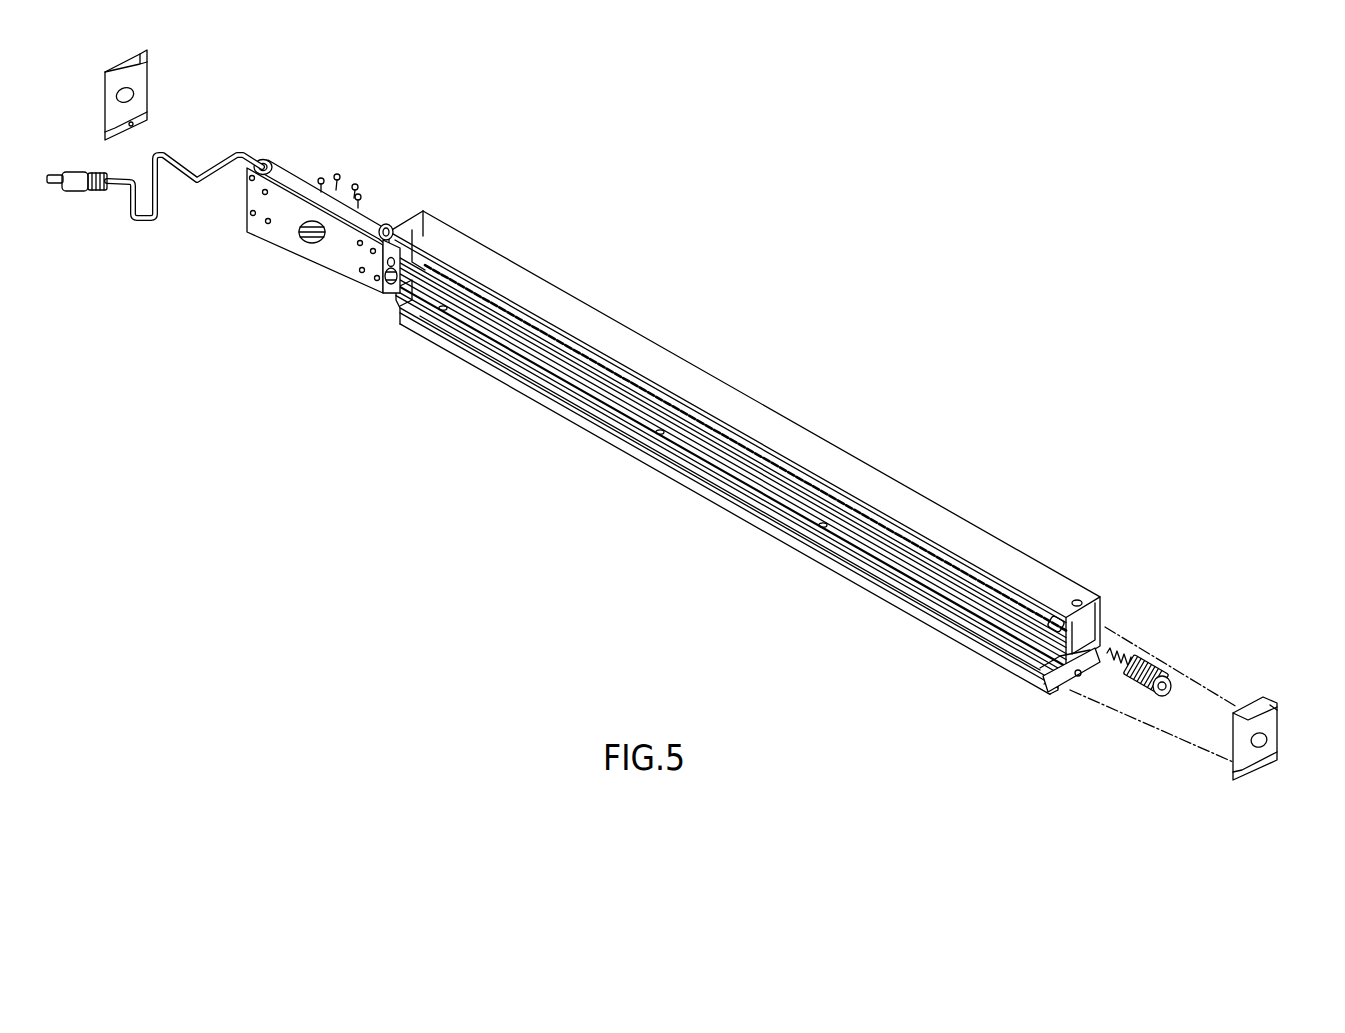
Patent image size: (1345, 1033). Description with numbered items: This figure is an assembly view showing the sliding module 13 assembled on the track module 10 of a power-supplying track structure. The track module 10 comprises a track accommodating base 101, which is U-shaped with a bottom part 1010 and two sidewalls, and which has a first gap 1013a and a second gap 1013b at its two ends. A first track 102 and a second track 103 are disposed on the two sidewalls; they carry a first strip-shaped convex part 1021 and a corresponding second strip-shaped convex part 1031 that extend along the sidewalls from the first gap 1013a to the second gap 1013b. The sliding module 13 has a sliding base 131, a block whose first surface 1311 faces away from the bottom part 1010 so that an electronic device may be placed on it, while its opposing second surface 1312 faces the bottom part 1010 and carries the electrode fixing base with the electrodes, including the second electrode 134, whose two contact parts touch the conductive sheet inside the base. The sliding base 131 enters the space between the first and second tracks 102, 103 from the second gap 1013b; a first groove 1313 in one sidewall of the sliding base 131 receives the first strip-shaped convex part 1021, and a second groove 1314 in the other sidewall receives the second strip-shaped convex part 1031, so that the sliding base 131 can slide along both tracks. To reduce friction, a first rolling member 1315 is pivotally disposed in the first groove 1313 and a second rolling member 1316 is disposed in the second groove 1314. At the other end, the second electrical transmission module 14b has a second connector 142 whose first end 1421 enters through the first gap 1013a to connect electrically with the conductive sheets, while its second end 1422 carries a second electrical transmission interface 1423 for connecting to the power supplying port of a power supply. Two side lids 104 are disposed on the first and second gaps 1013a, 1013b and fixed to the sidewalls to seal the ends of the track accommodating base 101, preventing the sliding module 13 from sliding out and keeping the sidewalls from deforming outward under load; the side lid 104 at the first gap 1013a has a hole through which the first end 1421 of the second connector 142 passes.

The track module 10 is at (750, 485).
The track accommodating base 101 is at (603, 300).
The bottom part 1010 is at (1100, 616).
The first track 102 is at (430, 327).
The first strip-shaped convex part 1021 is at (455, 330).
The second track 103 is at (413, 258).
The second strip-shaped convex part 1031 is at (1057, 624).
The first gap 1013a is at (1067, 685).
The second gap 1013b is at (395, 290).
The sliding module 13 is at (287, 225).
The sliding base 131 is at (245, 200).
The first surface 1311 is at (265, 210).
The second surface 1312 is at (290, 168).
The first groove 1313 is at (382, 287).
The second groove 1314 is at (380, 233).
The first rolling member 1315 is at (385, 275).
The second rolling member 1316 is at (265, 162).
The second electrode 134 is at (365, 182).
The second electrical transmission module 14b is at (1134, 715).
The second connector 142 is at (1133, 656).
The first end 1421 is at (1063, 664).
The second end 1422 is at (1165, 684).
The second electrical transmission interface 1423 is at (1162, 694).
The side lid 104 is at (140, 72).